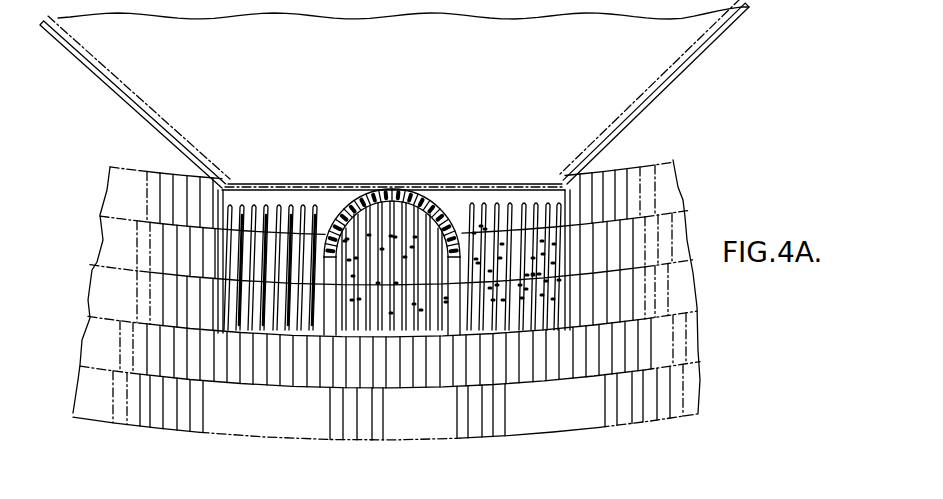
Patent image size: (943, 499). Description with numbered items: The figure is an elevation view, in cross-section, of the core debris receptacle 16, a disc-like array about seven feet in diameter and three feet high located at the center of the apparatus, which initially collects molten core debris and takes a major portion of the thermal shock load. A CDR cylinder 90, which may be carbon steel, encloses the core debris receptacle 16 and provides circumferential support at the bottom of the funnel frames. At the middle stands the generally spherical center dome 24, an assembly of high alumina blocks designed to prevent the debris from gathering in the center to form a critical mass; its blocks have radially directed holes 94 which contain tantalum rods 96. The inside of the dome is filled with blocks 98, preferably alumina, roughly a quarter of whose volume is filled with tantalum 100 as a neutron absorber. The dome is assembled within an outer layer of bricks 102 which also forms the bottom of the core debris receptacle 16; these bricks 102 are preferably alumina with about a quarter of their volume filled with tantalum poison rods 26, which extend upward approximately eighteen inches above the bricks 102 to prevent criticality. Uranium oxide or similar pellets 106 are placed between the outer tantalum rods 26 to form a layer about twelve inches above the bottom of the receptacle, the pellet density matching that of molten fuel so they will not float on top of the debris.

The core debris receptacle 16 is at (739, 358).
The center dome 24 is at (428, 210).
The tantalum poison rods 26 is at (298, 232).
The CDR cylinder 90 is at (571, 218).
The radially directed holes 94 is at (388, 201).
The tantalum rods 96 is at (384, 196).
The blocks 98 is at (414, 325).
The tantalum 100 is at (390, 323).
The outer layer of bricks 102 is at (563, 327).
The pellets 106 is at (532, 235).